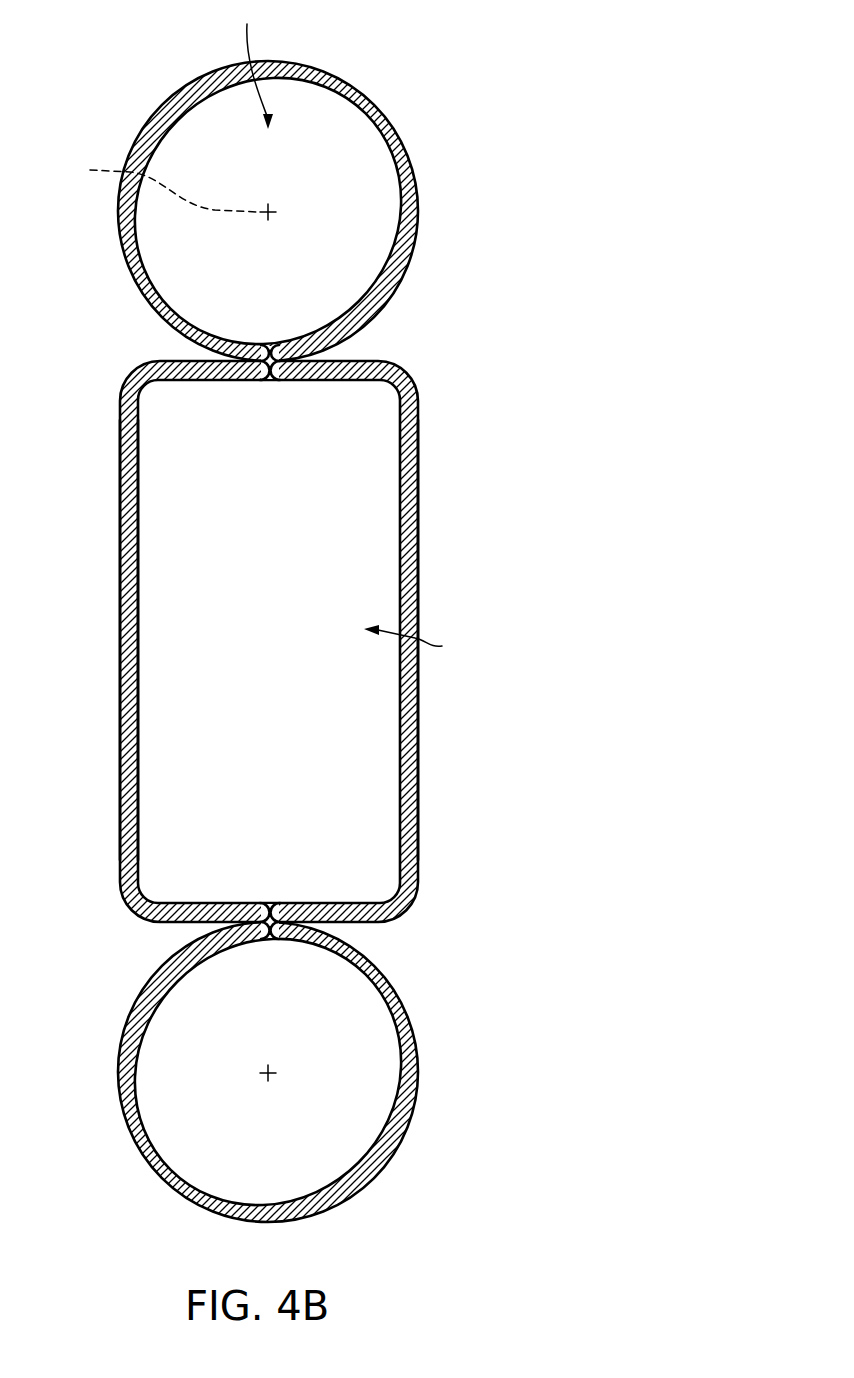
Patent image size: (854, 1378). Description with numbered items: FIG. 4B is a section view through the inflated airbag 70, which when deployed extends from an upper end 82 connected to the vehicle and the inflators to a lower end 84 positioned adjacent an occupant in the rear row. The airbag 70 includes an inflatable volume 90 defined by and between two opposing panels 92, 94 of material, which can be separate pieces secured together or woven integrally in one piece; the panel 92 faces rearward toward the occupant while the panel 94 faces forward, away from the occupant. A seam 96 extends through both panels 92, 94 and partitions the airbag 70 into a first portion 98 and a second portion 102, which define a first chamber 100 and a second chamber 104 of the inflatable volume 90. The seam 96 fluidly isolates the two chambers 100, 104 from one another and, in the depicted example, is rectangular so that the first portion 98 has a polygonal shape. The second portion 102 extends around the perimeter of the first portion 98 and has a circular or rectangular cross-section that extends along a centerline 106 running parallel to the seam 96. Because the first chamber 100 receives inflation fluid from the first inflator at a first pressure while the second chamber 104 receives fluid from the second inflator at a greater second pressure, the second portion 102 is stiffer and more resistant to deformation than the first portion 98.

The airbag 70 is at (298, 611).
The upper end 82 is at (259, 180).
The lower end 84 is at (121, 1172).
The inflatable volume 90 is at (278, 641).
The panel 92 is at (419, 549).
The panel 94 is at (120, 672).
The seam 96 is at (269, 360).
The first portion 98 is at (130, 595).
The first chamber 100 is at (428, 643).
The second portion 102 is at (398, 121).
The second chamber 104 is at (253, 64).
The centerline 106 is at (164, 188).